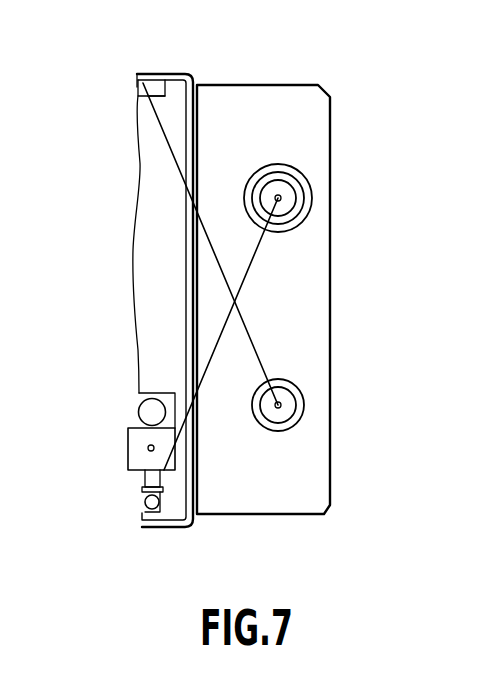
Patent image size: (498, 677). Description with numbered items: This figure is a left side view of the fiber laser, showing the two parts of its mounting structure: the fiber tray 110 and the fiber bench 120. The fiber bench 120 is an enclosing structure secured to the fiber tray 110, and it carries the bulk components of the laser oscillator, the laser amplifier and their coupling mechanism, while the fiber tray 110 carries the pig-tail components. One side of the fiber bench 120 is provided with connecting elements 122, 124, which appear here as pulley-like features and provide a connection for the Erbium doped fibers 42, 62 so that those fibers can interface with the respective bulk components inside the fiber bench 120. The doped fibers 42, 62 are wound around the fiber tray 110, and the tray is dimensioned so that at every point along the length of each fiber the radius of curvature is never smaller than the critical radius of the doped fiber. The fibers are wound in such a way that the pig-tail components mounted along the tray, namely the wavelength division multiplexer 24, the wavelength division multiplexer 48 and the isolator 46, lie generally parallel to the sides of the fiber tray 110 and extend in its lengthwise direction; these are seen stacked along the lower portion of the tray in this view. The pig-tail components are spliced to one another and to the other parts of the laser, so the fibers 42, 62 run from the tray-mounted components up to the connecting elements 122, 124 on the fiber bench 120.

The fiber tray 110 is at (163, 73).
The fiber bench 120 is at (270, 84).
The connecting element 124 is at (270, 168).
The connecting element 122 is at (283, 428).
The Erbium doped fiber 62 is at (255, 252).
The Erbium doped fiber 42 is at (262, 358).
The isolator 46 is at (140, 410).
The wavelength division multiplexer 48 is at (128, 453).
The wavelength division multiplexer 24 is at (140, 505).